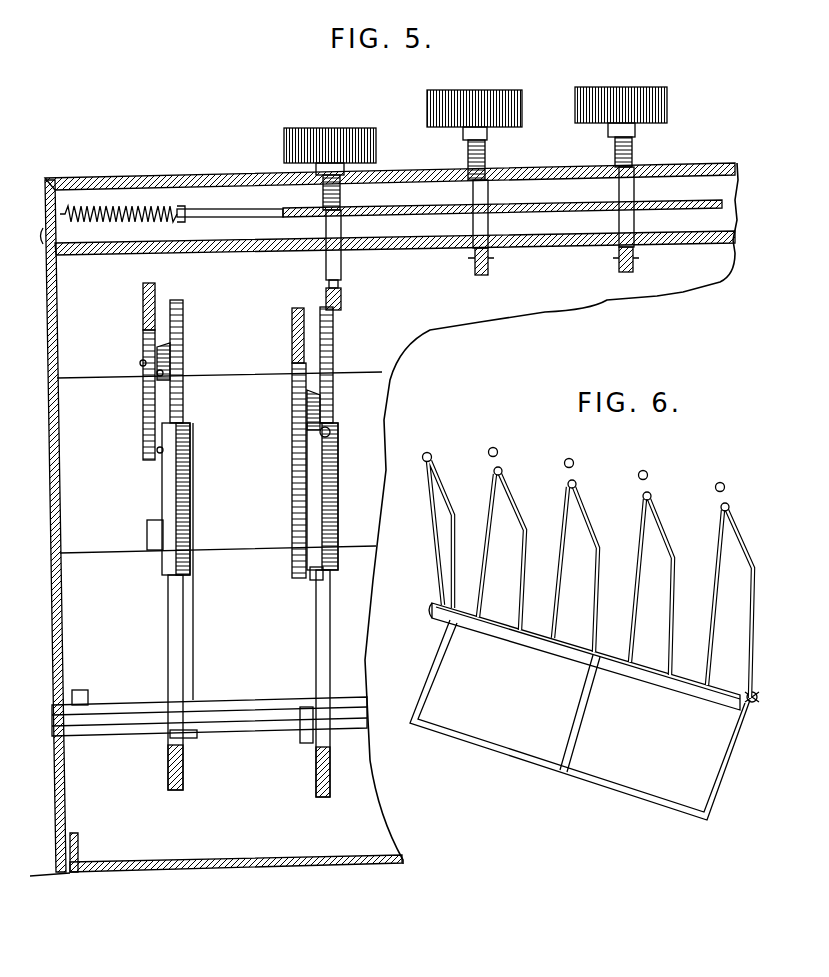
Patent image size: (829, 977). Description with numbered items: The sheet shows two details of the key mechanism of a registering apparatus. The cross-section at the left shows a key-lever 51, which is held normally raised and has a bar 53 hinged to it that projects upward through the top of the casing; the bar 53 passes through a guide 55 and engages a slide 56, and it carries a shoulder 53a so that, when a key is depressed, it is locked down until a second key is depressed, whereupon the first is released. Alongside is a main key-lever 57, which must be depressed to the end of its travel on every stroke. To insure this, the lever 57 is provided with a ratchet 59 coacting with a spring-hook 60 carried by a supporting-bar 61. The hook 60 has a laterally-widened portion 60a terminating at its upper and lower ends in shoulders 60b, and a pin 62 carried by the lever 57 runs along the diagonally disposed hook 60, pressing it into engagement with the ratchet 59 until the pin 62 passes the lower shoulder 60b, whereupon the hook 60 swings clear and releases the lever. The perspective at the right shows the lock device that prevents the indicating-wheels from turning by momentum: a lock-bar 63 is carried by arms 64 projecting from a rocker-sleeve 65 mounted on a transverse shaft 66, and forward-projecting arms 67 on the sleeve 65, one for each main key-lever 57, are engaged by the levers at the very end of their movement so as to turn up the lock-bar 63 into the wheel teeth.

In FIG. 5, the key-lever 51 is at (625, 270).
In FIG. 5, the bar 53 is at (633, 148).
In FIG. 5, the shoulder or projection 53a is at (632, 184).
In FIG. 5, the guide 55 is at (680, 217).
In FIG. 5, the slide 56 is at (556, 200).
In FIG. 5, the main key-lever 57 is at (297, 392).
In FIG. 5, the ratchet 59 is at (328, 352).
In FIG. 5, the spring-hook 60 is at (332, 586).
In FIG. 5, the laterally-widened portion 60a is at (317, 501).
In FIG. 5, the shoulder 60b is at (333, 462).
In FIG. 5, the supporting-bar 61 is at (252, 703).
In FIG. 5, the pin 62 is at (323, 430).
In FIG. 6, the lock-bar 63 is at (617, 793).
In FIG. 6, the arm 64 is at (580, 718).
In FIG. 6, the rocker-sleeve 65 is at (680, 673).
In FIG. 6, the transverse shaft 66 is at (754, 704).
In FIG. 6, the arm 67 is at (667, 541).